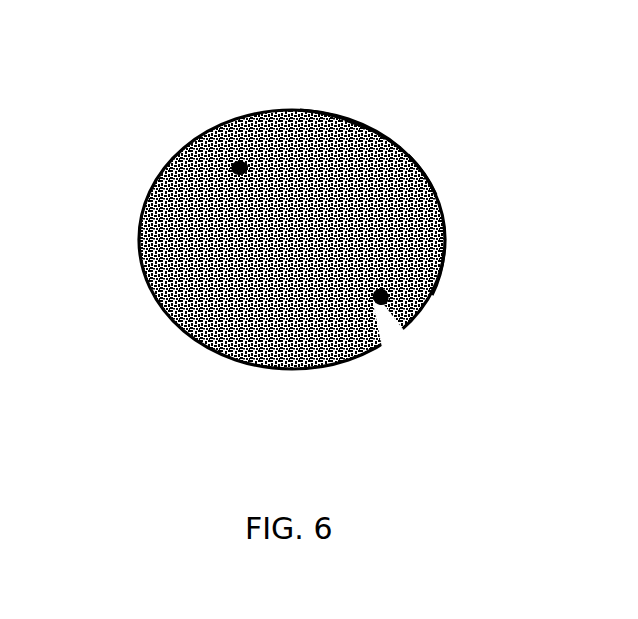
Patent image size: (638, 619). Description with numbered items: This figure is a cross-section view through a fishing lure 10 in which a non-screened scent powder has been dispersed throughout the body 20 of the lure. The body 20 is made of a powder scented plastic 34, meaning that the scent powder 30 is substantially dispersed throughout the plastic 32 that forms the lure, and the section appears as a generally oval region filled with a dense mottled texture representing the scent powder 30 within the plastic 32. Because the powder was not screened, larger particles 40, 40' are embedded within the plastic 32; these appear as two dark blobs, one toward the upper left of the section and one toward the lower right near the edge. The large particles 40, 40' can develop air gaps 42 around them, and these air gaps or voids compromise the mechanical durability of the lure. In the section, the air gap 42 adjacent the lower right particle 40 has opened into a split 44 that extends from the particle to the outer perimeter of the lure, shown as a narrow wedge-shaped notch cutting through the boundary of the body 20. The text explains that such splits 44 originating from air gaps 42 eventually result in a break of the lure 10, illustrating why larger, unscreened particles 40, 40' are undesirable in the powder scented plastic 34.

The fishing lure 10 is at (138, 136).
The body 20 is at (287, 108).
The scent powder 30 is at (383, 132).
The plastic 32 is at (428, 174).
The powder scented plastic 34 is at (338, 110).
The larger particles 40 is at (412, 347).
The larger particles 40' is at (222, 113).
The air gaps 42 is at (437, 278).
The splits 44 is at (389, 308).